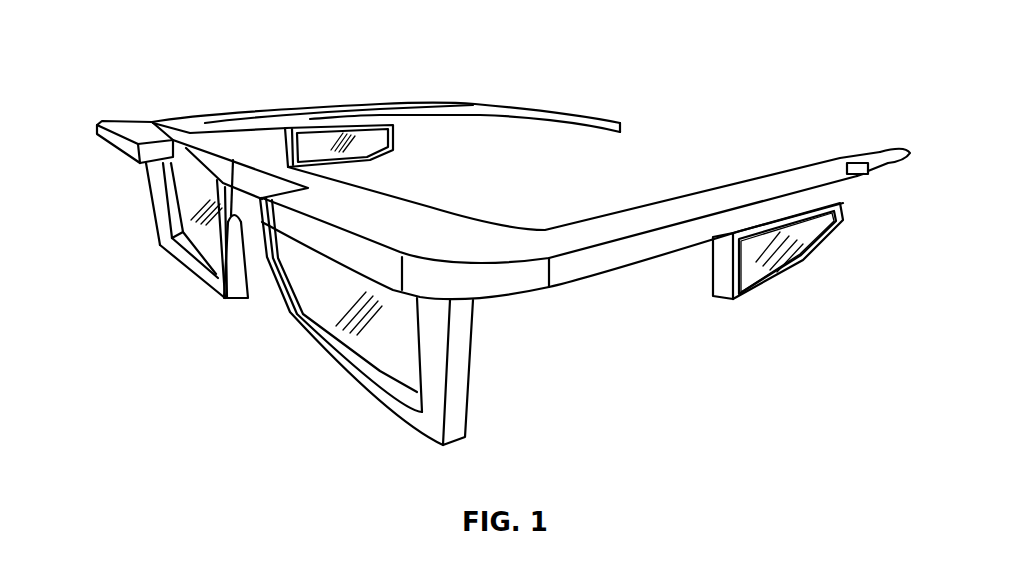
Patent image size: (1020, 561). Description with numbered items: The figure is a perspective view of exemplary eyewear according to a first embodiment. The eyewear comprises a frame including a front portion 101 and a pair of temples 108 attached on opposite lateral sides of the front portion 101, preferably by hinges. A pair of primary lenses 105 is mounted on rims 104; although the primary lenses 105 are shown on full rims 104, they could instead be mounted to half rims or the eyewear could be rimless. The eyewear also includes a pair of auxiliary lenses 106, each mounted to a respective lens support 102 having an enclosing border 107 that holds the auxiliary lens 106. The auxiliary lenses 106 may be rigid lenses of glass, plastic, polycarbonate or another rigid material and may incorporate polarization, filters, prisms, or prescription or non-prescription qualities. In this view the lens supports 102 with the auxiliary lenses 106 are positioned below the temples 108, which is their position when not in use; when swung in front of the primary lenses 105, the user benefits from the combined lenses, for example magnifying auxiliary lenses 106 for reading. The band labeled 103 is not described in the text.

The front portion 101 is at (403, 188).
The lens support 102 is at (400, 129).
The front frame band 103 is at (457, 224).
The rim 104 is at (160, 203).
The primary lens 105 is at (205, 238).
The auxiliary lens 106 is at (843, 199).
The enclosing border 107 is at (783, 272).
The temple 108 is at (364, 98).